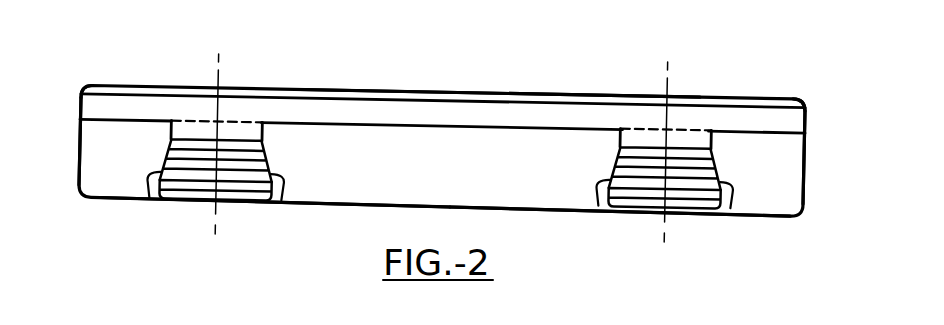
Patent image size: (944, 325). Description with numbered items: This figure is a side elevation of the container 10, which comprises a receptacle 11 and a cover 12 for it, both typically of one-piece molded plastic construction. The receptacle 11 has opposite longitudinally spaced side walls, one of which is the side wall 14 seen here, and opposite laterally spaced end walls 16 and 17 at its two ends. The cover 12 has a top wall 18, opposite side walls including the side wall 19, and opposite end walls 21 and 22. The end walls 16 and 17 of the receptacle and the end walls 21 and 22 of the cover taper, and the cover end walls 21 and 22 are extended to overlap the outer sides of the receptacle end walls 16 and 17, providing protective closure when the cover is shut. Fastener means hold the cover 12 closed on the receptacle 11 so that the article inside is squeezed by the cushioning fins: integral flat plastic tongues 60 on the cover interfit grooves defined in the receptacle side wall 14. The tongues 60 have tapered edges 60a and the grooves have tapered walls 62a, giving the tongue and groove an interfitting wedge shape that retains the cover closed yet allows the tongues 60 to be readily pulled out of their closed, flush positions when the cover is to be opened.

The container 10 is at (510, 84).
The receptacle 11 is at (375, 200).
The cover 12 is at (327, 89).
The side wall 14 is at (545, 195).
The end wall 16 is at (805, 158).
The end wall 17 is at (80, 147).
The top wall 18 is at (586, 99).
The side wall 19 is at (380, 110).
The end wall 21 is at (806, 118).
The end wall 22 is at (79, 101).
The tongue 60 is at (240, 156).
The tapered edges 60a is at (158, 173).
The tapered walls 62a is at (173, 190).